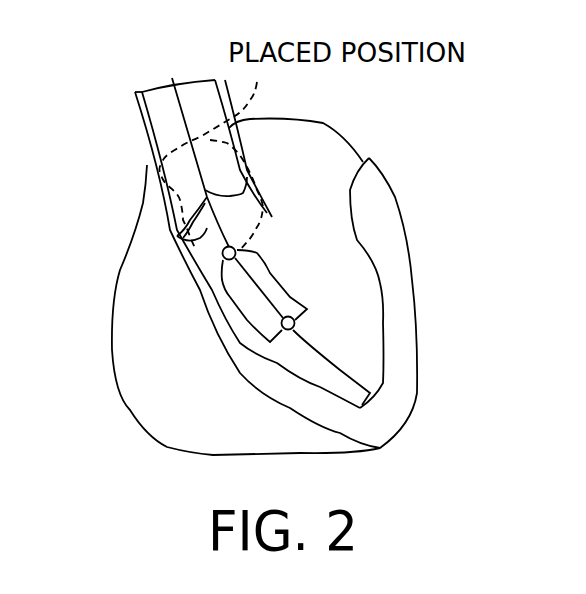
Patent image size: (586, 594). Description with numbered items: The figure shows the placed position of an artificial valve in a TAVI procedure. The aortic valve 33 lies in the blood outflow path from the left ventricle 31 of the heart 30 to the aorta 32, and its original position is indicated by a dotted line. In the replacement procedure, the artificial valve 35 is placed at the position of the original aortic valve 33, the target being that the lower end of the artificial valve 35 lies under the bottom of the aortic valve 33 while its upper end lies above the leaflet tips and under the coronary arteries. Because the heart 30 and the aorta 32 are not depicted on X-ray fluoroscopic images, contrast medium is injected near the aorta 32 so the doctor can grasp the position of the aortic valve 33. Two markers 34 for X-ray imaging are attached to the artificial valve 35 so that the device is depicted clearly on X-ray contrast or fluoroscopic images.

The heart 30 is at (393, 198).
The left ventricle 31 is at (332, 273).
The aorta 32 is at (133, 132).
The aortic valve 33 is at (200, 212).
The markers 34 is at (222, 253).
The artificial valve 35 is at (243, 288).